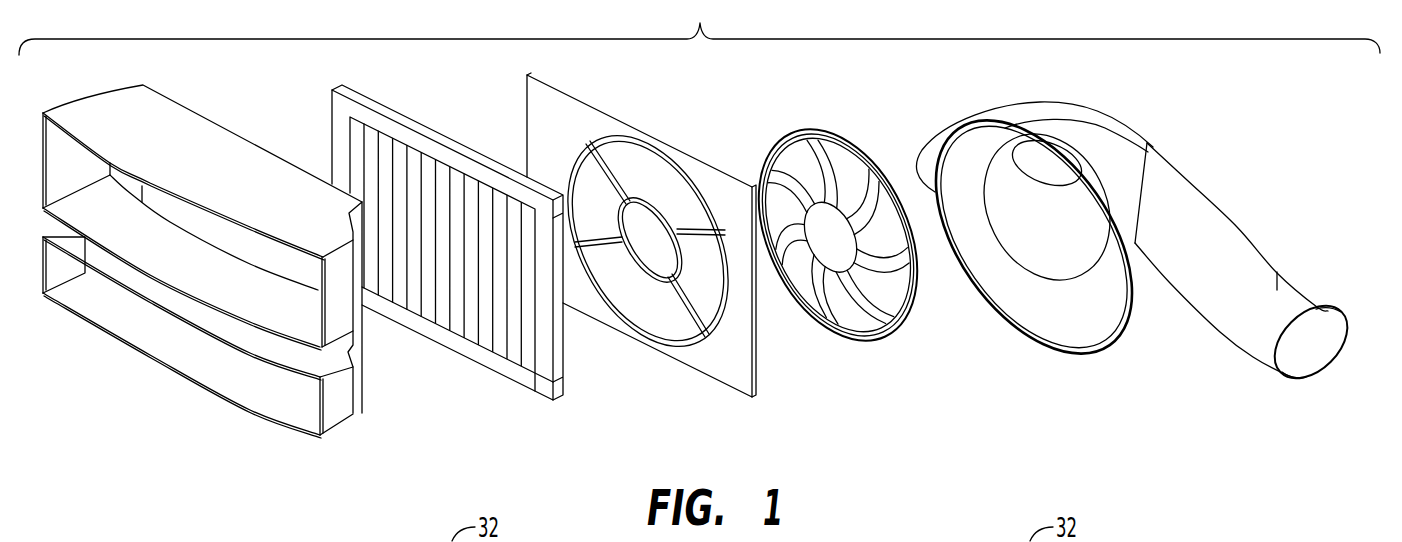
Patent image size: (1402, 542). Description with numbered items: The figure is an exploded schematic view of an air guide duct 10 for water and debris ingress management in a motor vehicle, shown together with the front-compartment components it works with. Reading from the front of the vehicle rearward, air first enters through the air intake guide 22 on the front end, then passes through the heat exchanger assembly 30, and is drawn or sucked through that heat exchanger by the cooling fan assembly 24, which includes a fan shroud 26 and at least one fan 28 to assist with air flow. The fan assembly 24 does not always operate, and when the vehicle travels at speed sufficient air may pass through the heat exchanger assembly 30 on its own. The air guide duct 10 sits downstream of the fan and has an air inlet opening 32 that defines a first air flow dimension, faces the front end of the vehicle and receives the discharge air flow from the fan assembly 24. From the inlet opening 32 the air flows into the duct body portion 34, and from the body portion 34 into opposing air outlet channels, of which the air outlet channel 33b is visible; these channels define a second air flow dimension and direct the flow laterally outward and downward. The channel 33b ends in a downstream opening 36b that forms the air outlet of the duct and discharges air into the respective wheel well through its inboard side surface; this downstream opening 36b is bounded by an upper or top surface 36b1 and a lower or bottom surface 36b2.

The air guide duct 10 is at (1097, 132).
The air intake guide 22 is at (330, 408).
The cooling fan assembly 24 is at (587, 413).
The fan shroud 26 is at (758, 358).
The fan 28 is at (905, 323).
The heat exchanger assembly 30 is at (472, 362).
The air inlet opening 32 is at (1073, 327).
The air outlet channel 33b is at (1278, 267).
The duct body portion 34 is at (1125, 167).
The downstream opening 36b is at (1303, 350).
The top surface of downstream opening 36b1 is at (1317, 307).
The bottom surface of downstream opening 36b2 is at (1302, 377).